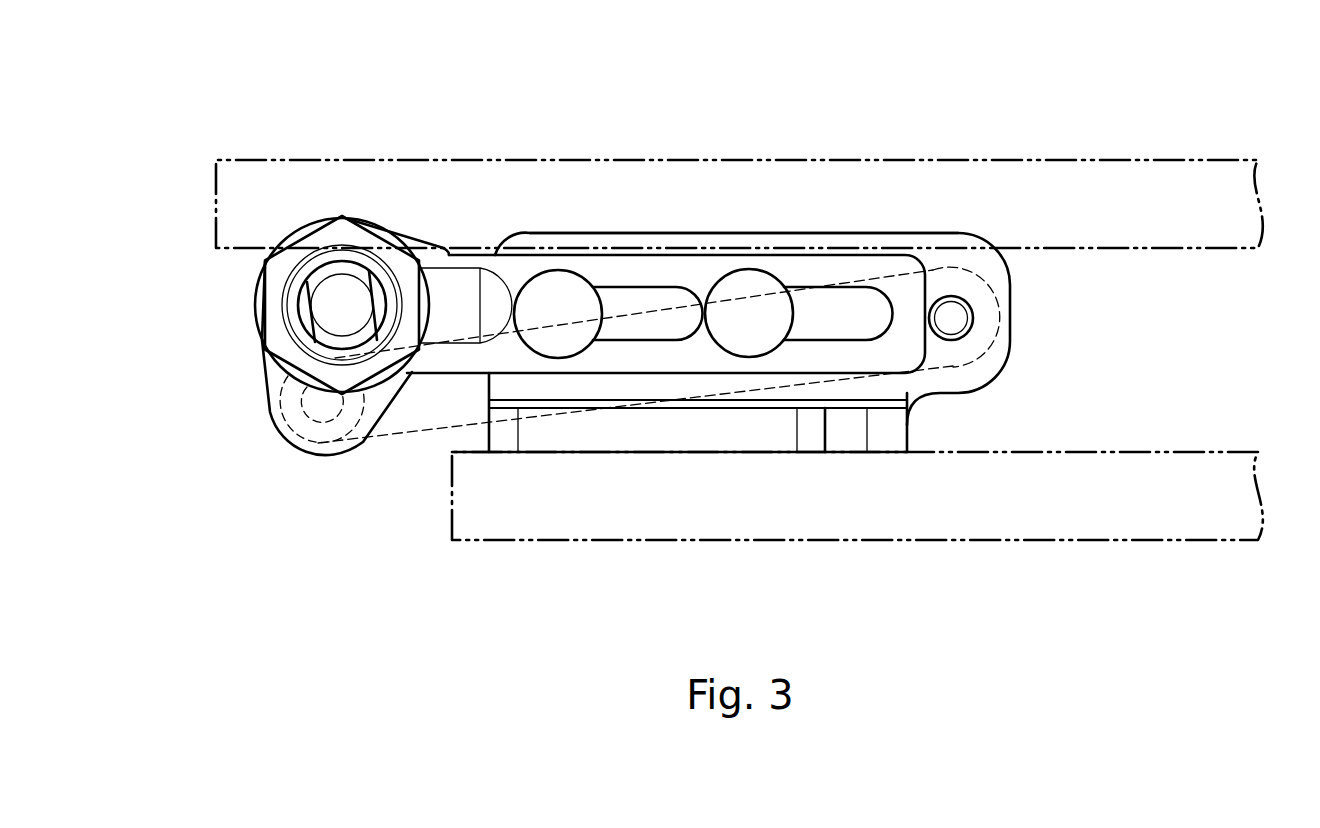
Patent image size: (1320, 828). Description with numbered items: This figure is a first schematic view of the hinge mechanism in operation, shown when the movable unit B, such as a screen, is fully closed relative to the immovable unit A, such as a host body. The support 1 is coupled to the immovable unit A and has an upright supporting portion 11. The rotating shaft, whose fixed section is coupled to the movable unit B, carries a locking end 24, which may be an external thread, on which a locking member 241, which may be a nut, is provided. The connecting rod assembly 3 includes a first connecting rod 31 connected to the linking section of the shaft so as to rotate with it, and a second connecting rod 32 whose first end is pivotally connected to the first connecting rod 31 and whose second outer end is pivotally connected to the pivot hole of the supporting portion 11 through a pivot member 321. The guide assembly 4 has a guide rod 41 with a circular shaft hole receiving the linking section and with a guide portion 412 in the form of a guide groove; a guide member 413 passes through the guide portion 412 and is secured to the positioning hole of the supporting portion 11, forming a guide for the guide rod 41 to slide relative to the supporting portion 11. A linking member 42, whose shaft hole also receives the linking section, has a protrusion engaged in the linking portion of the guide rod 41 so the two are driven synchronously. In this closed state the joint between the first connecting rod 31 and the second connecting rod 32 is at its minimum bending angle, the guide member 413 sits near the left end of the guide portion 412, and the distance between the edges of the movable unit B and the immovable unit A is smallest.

The support 1 is at (688, 440).
The supporting portion 11 is at (652, 240).
The connecting rod assembly 3 is at (250, 552).
The first connecting rod 31 is at (285, 438).
The second connecting rod 32 is at (410, 432).
The pivot member 321 is at (952, 318).
The guide assembly 4 is at (548, 70).
The guide rod 41 is at (602, 265).
The guide portion 412 is at (862, 307).
The guide member 413 is at (748, 283).
The linking member 42 is at (460, 287).
The locking end 24 is at (333, 315).
The locking member 241 is at (277, 280).
The immovable unit A is at (1084, 535).
The movable unit B is at (1142, 160).